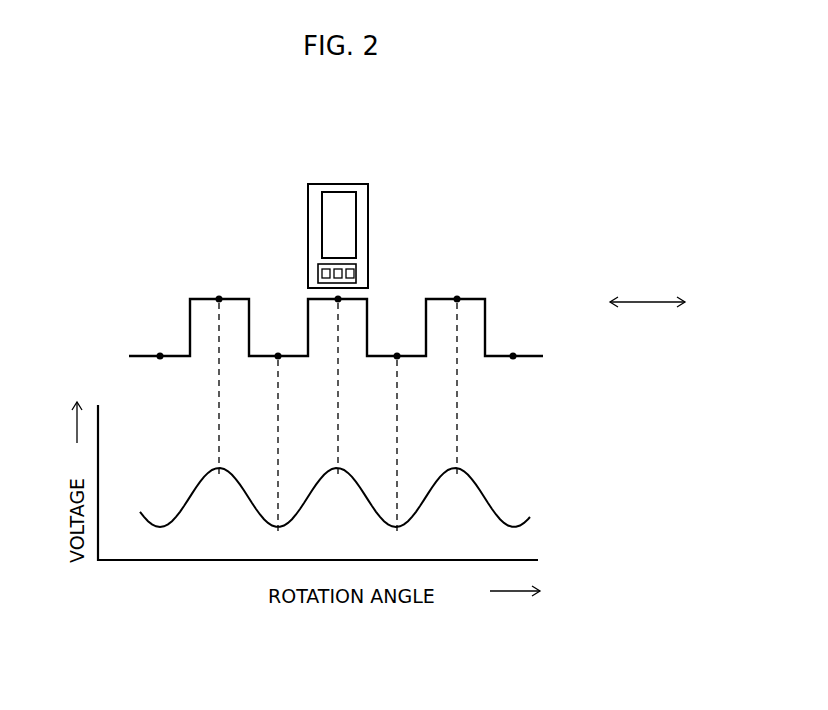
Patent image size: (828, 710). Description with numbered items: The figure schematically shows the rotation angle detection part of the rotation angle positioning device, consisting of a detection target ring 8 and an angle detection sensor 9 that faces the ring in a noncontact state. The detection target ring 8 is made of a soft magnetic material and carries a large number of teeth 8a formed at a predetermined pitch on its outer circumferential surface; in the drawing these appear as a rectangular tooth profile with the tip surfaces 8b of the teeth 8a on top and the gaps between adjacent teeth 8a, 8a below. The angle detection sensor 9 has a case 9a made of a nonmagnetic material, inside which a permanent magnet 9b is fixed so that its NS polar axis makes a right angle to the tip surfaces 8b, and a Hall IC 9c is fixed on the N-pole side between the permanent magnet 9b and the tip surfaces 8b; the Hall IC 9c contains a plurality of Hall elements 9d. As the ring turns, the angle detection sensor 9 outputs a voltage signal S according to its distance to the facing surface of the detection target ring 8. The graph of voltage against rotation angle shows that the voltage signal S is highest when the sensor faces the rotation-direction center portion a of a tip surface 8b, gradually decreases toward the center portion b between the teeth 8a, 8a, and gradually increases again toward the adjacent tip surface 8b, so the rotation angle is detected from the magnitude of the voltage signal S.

The detection target ring 8 is at (540, 350).
The teeth 8a is at (190, 325).
The tip surfaces 8b is at (317, 299).
The angle detection sensor 9 is at (338, 195).
The case 9a is at (368, 207).
The permanent magnet 9b is at (322, 217).
The Hall IC 9c is at (356, 275).
The Hall elements 9d is at (333, 273).
The rotation-direction center portion of the tip surface a is at (219, 299).
The center portion between the teeth b is at (278, 356).
The voltage signal S is at (483, 498).